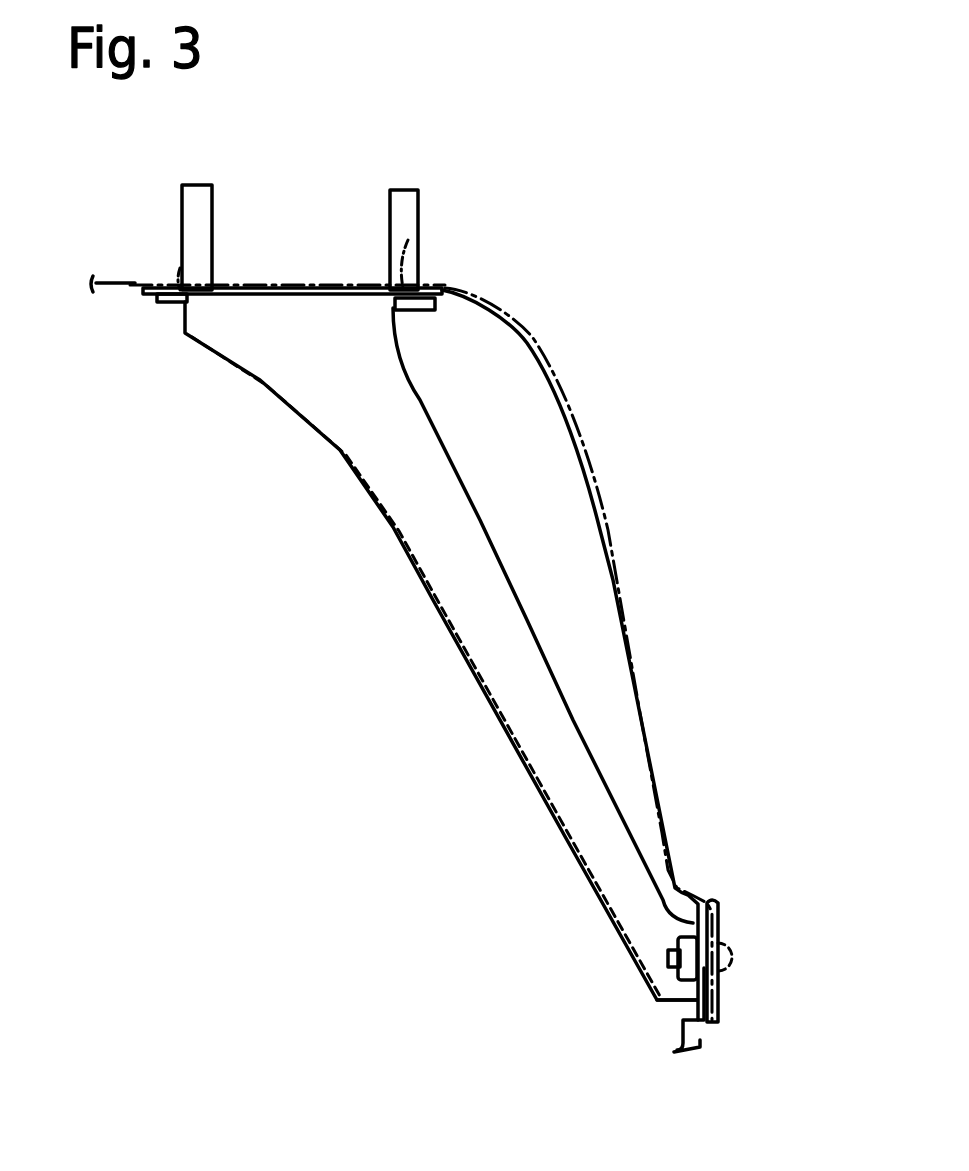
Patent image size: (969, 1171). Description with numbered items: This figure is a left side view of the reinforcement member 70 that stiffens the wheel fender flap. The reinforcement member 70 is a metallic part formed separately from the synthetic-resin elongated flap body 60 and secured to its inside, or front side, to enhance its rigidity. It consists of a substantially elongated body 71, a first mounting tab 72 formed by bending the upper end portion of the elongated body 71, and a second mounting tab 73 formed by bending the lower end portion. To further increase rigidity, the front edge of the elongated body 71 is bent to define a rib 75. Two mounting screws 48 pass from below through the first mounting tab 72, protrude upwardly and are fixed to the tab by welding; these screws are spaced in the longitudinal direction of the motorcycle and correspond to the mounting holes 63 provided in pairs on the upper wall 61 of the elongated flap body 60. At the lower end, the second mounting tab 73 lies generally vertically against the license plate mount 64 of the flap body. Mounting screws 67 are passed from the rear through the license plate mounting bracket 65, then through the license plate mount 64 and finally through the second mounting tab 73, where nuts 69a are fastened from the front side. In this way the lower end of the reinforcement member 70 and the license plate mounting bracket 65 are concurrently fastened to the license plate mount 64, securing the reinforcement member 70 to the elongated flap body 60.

The mounting screws 48 is at (210, 204).
The elongated flap body 60 is at (610, 535).
The upper wall 61 is at (127, 278).
The mounting holes 63 is at (177, 263).
The license plate mount 64 is at (712, 905).
The license plate mounting bracket 65 is at (718, 1010).
The mounting screws 67 is at (740, 945).
The nuts 69a is at (678, 993).
The reinforcement member 70 is at (487, 508).
The elongated body 71 is at (518, 633).
The first mounting tab 72 is at (440, 286).
The second mounting tab 73 is at (735, 966).
The rib 75 is at (517, 737).